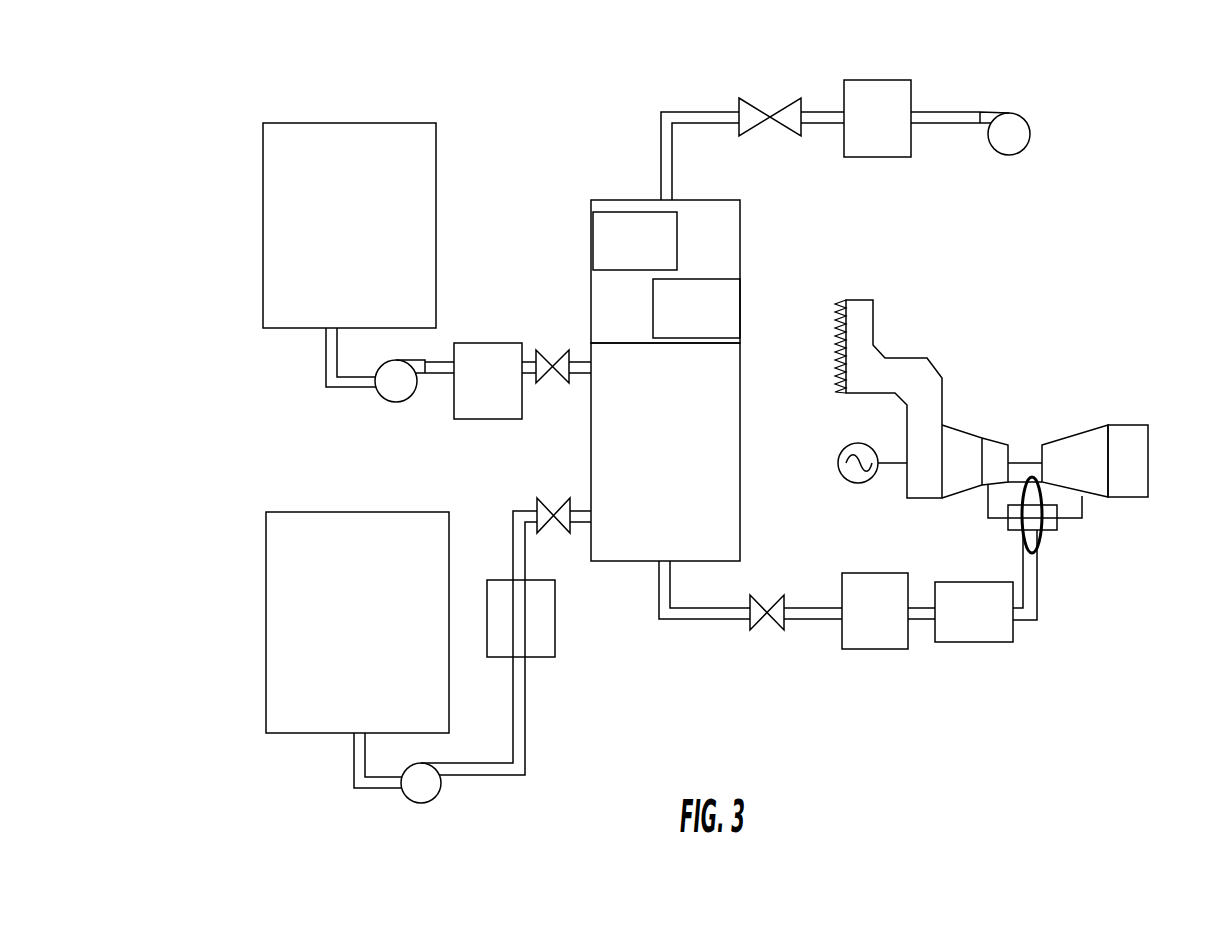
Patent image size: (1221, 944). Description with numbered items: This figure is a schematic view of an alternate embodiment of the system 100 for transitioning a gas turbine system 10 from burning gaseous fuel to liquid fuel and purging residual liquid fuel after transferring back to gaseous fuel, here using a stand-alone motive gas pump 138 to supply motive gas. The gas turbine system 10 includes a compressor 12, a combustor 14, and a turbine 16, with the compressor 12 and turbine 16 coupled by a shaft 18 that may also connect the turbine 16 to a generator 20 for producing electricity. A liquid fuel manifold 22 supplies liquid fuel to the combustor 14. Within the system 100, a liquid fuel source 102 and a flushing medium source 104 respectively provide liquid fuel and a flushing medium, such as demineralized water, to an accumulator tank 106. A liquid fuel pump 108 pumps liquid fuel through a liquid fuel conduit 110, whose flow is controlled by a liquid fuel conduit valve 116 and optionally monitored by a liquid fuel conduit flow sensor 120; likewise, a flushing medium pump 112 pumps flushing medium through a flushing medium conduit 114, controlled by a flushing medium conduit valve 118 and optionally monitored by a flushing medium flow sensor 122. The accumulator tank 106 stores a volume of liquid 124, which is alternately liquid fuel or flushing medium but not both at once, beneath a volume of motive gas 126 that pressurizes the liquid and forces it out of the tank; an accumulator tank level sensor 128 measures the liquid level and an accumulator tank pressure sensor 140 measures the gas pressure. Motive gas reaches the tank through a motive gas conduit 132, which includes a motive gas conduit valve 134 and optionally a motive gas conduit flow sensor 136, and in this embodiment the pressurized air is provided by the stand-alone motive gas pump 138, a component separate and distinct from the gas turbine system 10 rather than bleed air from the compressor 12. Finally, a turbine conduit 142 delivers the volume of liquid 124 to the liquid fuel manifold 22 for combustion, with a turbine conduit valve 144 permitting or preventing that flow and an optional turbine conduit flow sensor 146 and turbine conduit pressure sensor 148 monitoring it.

The gas turbine system 10 is at (1126, 551).
The compressor 12 is at (958, 498).
The combustor 14 is at (1052, 532).
The turbine 16 is at (1130, 425).
The shaft 18 is at (1023, 462).
The generator 20 is at (853, 483).
The liquid fuel manifold 22 is at (1037, 553).
The system 100 is at (232, 91).
The liquid fuel source 102 is at (266, 612).
The flushing medium source 104 is at (437, 210).
The accumulator tank 106 is at (588, 151).
The liquid fuel pump 108 is at (442, 780).
The liquid fuel conduit 110 is at (377, 788).
The flushing medium pump 112 is at (388, 402).
The flushing medium conduit 114 is at (325, 355).
The liquid fuel conduit valve 116 is at (550, 512).
The flushing medium conduit valve 118 is at (537, 380).
The liquid fuel conduit flow sensor 120 is at (557, 620).
The flushing medium flow sensor 122 is at (473, 419).
The volume of liquid 124 is at (610, 475).
The volume of motive gas 126 is at (604, 315).
The accumulator tank level sensor 128 is at (741, 312).
The motive gas conduit 132 is at (970, 112).
The motive gas conduit valve 134 is at (752, 103).
The motive gas conduit flow sensor 136 is at (912, 93).
The stand-alone motive gas pump 138 is at (1030, 132).
The accumulator tank pressure sensor 140 is at (591, 233).
The turbine conduit 142 is at (705, 620).
The turbine conduit valve 144 is at (783, 630).
The turbine conduit flow sensor 146 is at (885, 650).
The turbine conduit pressure sensor 148 is at (997, 642).